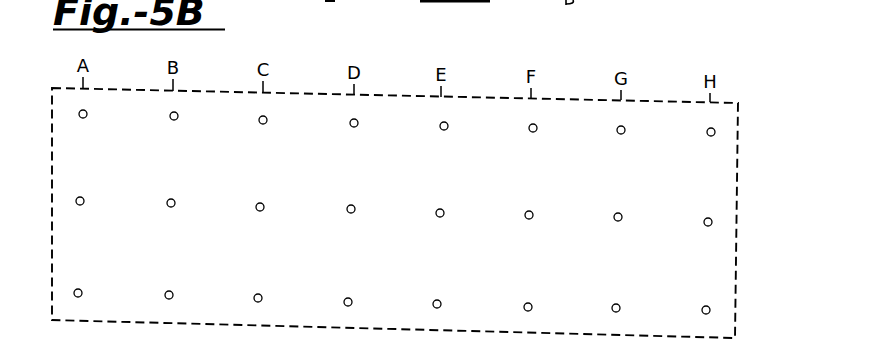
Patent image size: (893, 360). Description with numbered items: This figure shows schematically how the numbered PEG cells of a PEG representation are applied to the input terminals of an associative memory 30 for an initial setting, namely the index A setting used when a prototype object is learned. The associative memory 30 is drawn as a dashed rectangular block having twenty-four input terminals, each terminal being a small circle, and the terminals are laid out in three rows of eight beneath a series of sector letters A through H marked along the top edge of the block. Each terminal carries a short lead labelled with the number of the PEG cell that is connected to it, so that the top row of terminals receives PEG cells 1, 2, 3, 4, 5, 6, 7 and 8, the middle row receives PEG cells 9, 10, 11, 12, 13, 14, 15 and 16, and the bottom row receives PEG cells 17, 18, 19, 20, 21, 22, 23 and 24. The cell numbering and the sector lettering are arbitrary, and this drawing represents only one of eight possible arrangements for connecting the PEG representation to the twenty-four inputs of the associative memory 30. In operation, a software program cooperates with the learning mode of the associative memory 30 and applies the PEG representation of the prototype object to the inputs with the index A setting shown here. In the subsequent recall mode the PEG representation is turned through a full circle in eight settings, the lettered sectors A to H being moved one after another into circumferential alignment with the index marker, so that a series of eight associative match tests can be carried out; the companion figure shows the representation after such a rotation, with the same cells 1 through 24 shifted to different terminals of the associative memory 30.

The PEG cell 1 is at (82, 118).
The PEG cell 2 is at (170, 120).
The PEG cell 3 is at (259, 124).
The PEG cell 4 is at (350, 127).
The PEG cell 5 is at (441, 130).
The PEG cell 6 is at (530, 132).
The PEG cell 7 is at (618, 134).
The PEG cell 8 is at (708, 136).
The PEG cell 9 is at (82, 205).
The PEG cell 10 is at (173, 207).
The PEG cell 11 is at (262, 211).
The PEG cell 12 is at (353, 213).
The PEG cell 13 is at (442, 217).
The PEG cell 14 is at (531, 219).
The PEG cell 15 is at (620, 221).
The PEG cell 16 is at (707, 226).
The PEG cell 17 is at (74, 290).
The PEG cell 18 is at (165, 292).
The PEG cell 19 is at (254, 296).
The PEG cell 20 is at (344, 300).
The PEG cell 21 is at (433, 302).
The PEG cell 22 is at (524, 305).
The PEG cell 23 is at (612, 306).
The PEG cell 24 is at (702, 308).
The associative memory 30 is at (737, 195).